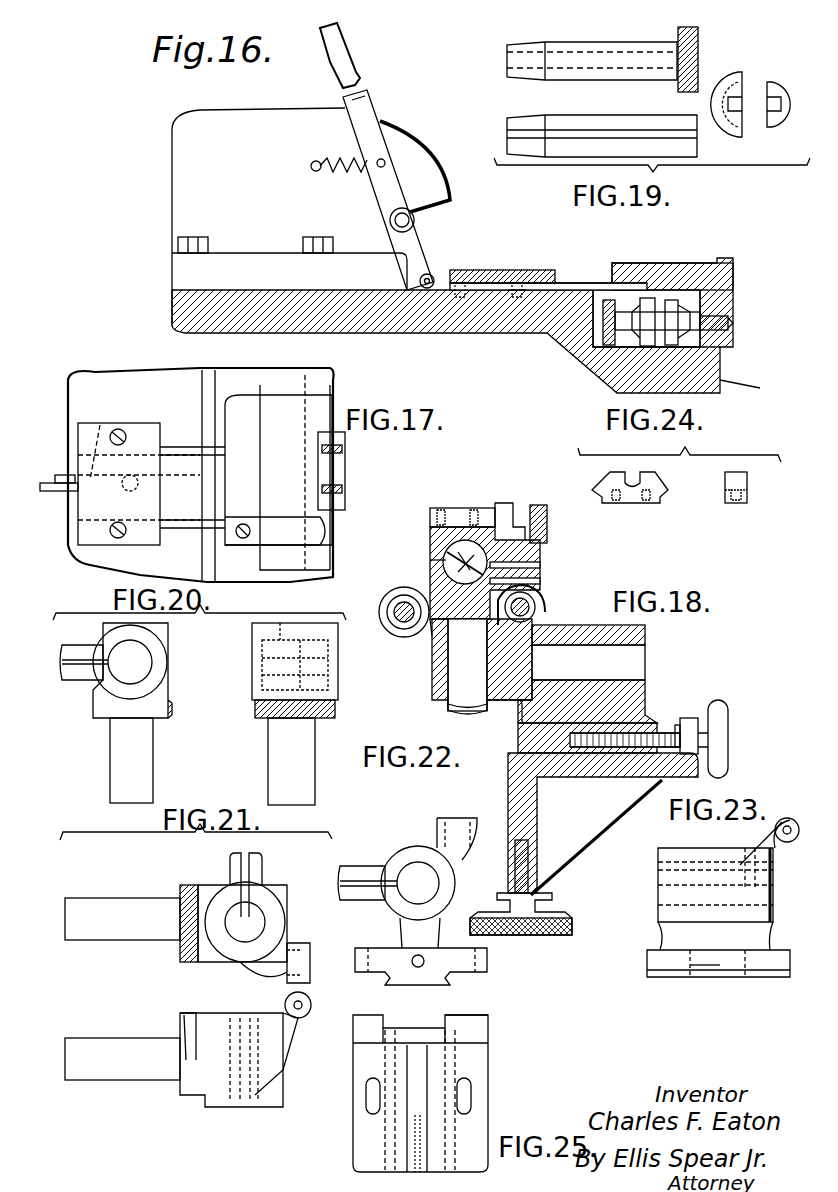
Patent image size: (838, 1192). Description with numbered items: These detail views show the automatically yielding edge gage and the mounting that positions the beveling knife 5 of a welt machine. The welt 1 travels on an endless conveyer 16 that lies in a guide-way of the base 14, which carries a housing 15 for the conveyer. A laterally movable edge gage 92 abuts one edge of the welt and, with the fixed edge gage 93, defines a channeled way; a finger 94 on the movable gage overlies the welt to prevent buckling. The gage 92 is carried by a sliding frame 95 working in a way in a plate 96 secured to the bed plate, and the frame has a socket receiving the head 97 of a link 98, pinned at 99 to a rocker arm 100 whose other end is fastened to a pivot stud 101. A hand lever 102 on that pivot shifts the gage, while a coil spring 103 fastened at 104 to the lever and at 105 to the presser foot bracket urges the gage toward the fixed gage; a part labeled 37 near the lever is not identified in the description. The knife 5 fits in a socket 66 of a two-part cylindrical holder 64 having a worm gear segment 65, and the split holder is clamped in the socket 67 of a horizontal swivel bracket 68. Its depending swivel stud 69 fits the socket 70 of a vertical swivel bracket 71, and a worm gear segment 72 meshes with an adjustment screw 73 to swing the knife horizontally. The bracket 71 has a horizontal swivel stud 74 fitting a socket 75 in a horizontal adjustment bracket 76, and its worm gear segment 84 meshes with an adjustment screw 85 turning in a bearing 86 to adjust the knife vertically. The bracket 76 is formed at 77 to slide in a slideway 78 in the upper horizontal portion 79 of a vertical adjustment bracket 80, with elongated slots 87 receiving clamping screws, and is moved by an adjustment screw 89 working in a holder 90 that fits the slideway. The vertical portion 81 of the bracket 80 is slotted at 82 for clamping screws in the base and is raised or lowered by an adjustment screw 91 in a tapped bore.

In FIG. 16, the welt strip 1 is at (733, 275).
In FIG. 17, the welt strip 1 is at (300, 420).
In FIG. 18, the beveling knife 5 is at (448, 560).
In FIG. 16, the base 14 is at (690, 345).
In FIG. 16, the housing 15 is at (748, 385).
In FIG. 16, the endless conveyer 16 is at (630, 340).
In FIG. 16, the operating lever 37 is at (385, 130).
In FIG. 19, the two-part cylindrical holder 64 is at (612, 75).
In FIG. 18, the two-part cylindrical holder 64 is at (460, 540).
In FIG. 19, the worm gear segment 65 is at (700, 50).
In FIG. 19, the socket 66 is at (752, 105).
In FIG. 18, the socket 66 is at (538, 505).
In FIG. 18, the socket 67 is at (432, 580).
In FIG. 20, the socket 67 is at (140, 660).
In FIG. 18, the horizontal swivel bracket 68 is at (432, 530).
In FIG. 20, the horizontal swivel bracket 68 is at (168, 668).
In FIG. 18, the swivel stud 69 is at (462, 677).
In FIG. 20, the swivel stud 69 is at (140, 762).
In FIG. 18, the socket 70 is at (495, 712).
In FIG. 21, the socket 70 is at (245, 922).
In FIG. 18, the vertical swivel bracket 71 is at (432, 670).
In FIG. 21, the vertical swivel bracket 71 is at (210, 885).
In FIG. 18, the worm gear segment 72 is at (428, 628).
In FIG. 20, the worm gear segment 72 is at (172, 708).
In FIG. 18, the adjustment screw 73 is at (395, 605).
In FIG. 21, the adjustment screw 73 is at (300, 943).
In FIG. 18, the swivel stud 74 is at (588, 662).
In FIG. 21, the swivel stud 74 is at (115, 935).
In FIG. 18, the socket 75 is at (645, 645).
In FIG. 22, the socket 75 is at (415, 888).
In FIG. 23, the socket 75 is at (658, 905).
In FIG. 18, the horizontal adjustment bracket 76 is at (630, 700).
In FIG. 22, the horizontal adjustment bracket 76 is at (452, 900).
In FIG. 23, the horizontal adjustment bracket 76 is at (760, 935).
In FIG. 18, the sliding portion 77 is at (540, 753).
In FIG. 22, the sliding portion 77 is at (440, 982).
In FIG. 23, the sliding portion 77 is at (768, 977).
In FIG. 25, the slideway 78 is at (412, 1028).
In FIG. 18, the upper horizontal portion 79 is at (620, 775).
In FIG. 25, the upper horizontal portion 79 is at (480, 1025).
In FIG. 25, the vertical adjustment bracket 80 is at (480, 1065).
In FIG. 18, the vertical portion 81 is at (537, 828).
In FIG. 25, the vertical portion 81 is at (360, 1135).
In FIG. 25, the slot 82 is at (471, 1095).
In FIG. 18, the worm gear segment 84 is at (535, 605).
In FIG. 21, the worm gear segment 84 is at (185, 885).
In FIG. 18, the adjustment screw 85 is at (530, 612).
In FIG. 18, the bearing 86 is at (545, 598).
In FIG. 22, the bearing 86 is at (445, 818).
In FIG. 23, the bearing 86 is at (790, 818).
In FIG. 23, the elongated slots 87 is at (720, 970).
In FIG. 18, the adjustment screw 89 is at (728, 738).
In FIG. 24, the holder 90 is at (655, 503).
In FIG. 18, the holder 90 is at (692, 718).
In FIG. 18, the adjustment screw 91 is at (548, 936).
In FIG. 16, the movable edge gage 92 is at (580, 283).
In FIG. 17, the movable edge gage 92 is at (267, 476).
In FIG. 16, the fixed edge gage 93 is at (733, 306).
In FIG. 17, the fixed edge gage 93 is at (345, 470).
In FIG. 16, the finger 94 is at (672, 265).
In FIG. 17, the finger 94 is at (275, 531).
In FIG. 16, the sliding frame 95 is at (575, 283).
In FIG. 17, the sliding frame 95 is at (185, 530).
In FIG. 16, the plate 96 is at (500, 270).
In FIG. 17, the plate 96 is at (155, 425).
In FIG. 16, the head 97 is at (518, 283).
In FIG. 17, the head 97 is at (138, 481).
In FIG. 16, the link 98 is at (460, 284).
In FIG. 17, the link 98 is at (100, 423).
In FIG. 16, the pin 99 is at (432, 278).
In FIG. 17, the pin 99 is at (60, 475).
In FIG. 16, the rocker arm 100 is at (414, 220).
In FIG. 17, the rocker arm 100 is at (52, 491).
In FIG. 16, the pivot stud 101 is at (452, 198).
In FIG. 16, the hand lever 102 is at (365, 133).
In FIG. 16, the coil spring 103 is at (345, 172).
In FIG. 16, the spring fastening 104 is at (385, 162).
In FIG. 16, the spring fastening 105 is at (312, 168).